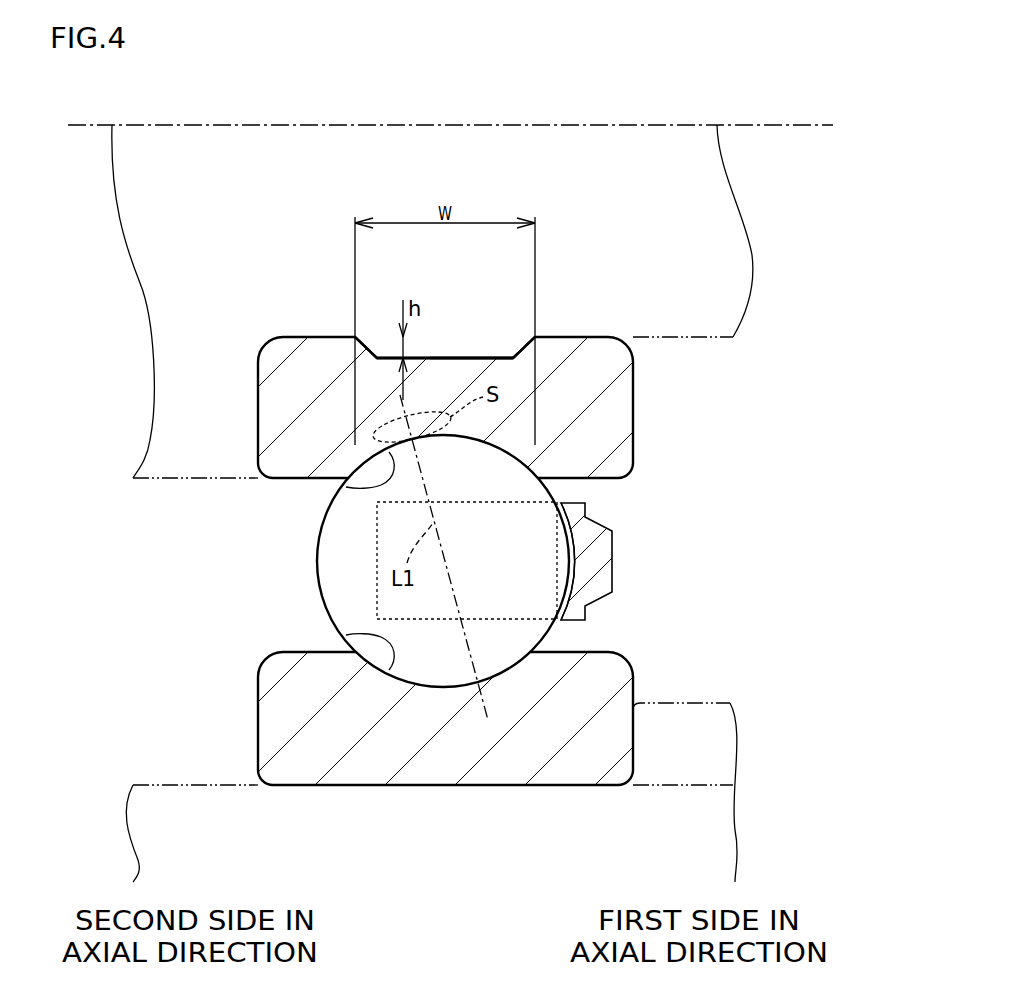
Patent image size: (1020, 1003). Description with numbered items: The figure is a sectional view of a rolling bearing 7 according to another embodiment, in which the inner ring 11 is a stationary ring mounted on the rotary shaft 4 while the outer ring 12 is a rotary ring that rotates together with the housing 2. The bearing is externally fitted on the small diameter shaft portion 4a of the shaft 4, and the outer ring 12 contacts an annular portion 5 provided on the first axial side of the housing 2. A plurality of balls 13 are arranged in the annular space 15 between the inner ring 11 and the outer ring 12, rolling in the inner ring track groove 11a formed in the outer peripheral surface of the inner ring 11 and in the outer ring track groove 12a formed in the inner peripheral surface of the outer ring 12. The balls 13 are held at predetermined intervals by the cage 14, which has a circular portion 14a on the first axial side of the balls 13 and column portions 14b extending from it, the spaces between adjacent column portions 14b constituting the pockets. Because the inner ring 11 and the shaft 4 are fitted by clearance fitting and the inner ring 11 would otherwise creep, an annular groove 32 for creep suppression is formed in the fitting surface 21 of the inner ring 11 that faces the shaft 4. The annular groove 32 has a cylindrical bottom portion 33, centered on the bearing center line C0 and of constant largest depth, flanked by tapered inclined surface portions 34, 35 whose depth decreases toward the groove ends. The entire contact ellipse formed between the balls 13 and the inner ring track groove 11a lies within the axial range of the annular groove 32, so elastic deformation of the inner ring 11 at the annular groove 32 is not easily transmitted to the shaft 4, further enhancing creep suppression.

The housing 2 is at (160, 785).
The rotary shaft 4 is at (160, 478).
The small diameter shaft portion 4a is at (705, 337).
The annular portion 5 is at (687, 715).
The rolling bearing 7 is at (540, 786).
The inner ring 11 is at (633, 400).
The inner ring track groove 11a is at (346, 487).
The outer ring 12 is at (633, 680).
The outer ring track groove 12a is at (346, 635).
The ball 13 is at (318, 557).
The cage 14 is at (612, 548).
The circular portion 14a is at (598, 565).
The column portion 14b is at (377, 583).
The annular space 15 is at (608, 503).
The fitting surface 21 is at (343, 337).
The annular groove 32 is at (443, 358).
The bottom portion 33 is at (487, 355).
The inclined surface portion 34 is at (518, 348).
The inclined surface portion 35 is at (372, 352).
The bearing center line C0 is at (780, 128).